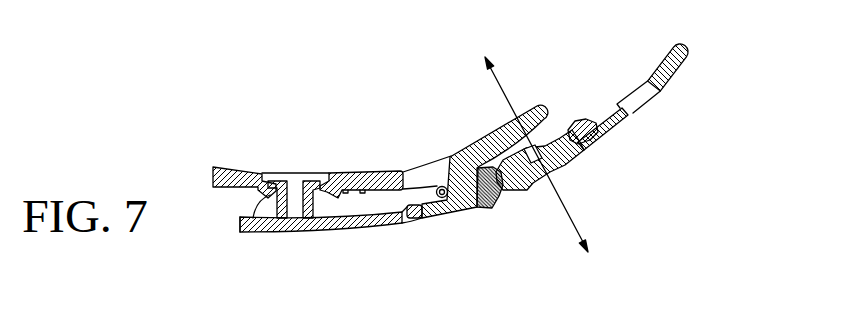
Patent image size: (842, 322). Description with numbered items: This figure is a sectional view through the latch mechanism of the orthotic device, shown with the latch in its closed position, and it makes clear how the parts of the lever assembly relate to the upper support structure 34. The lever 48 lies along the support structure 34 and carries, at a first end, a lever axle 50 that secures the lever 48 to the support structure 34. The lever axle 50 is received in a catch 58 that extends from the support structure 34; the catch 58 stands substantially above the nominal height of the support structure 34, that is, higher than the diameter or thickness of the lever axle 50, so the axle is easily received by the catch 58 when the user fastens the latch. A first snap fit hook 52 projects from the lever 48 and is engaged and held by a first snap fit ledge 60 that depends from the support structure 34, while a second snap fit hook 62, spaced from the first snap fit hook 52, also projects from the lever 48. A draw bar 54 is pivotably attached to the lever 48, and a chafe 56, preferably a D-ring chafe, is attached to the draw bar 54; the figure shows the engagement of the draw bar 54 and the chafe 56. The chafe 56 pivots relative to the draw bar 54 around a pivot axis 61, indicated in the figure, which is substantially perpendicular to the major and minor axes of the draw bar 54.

The upper support structure 34 is at (363, 173).
The lever 48 is at (352, 230).
The lever axle 50 is at (430, 207).
The first snap fit hook 52 is at (283, 179).
The draw bar 54 is at (496, 204).
The chafe 56 is at (557, 163).
The catch 58 is at (456, 208).
The first snap fit ledge 60 is at (255, 233).
The pivot axis 61 is at (510, 97).
The second snap fit hook 62 is at (310, 179).